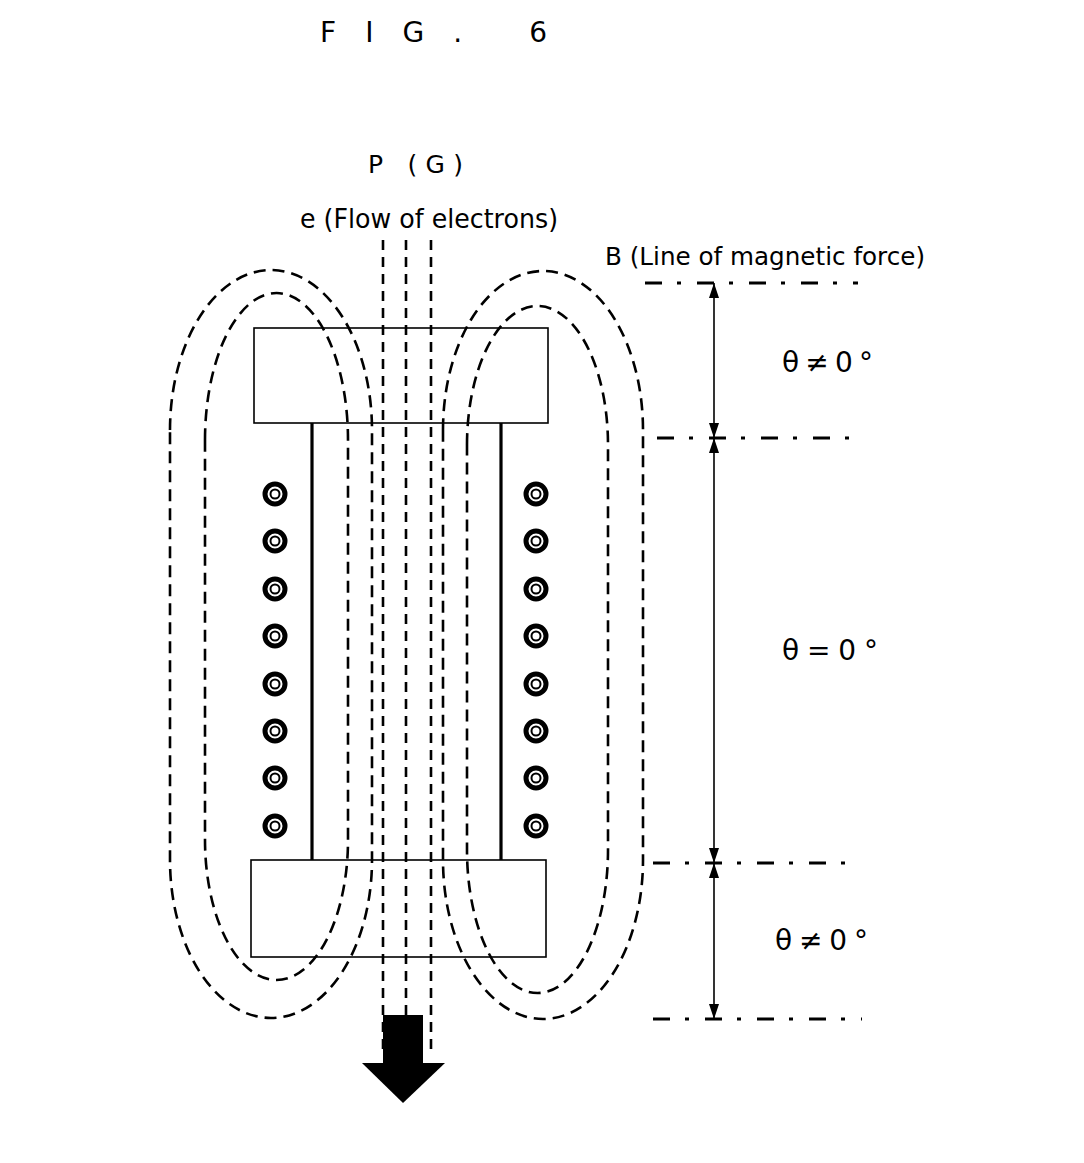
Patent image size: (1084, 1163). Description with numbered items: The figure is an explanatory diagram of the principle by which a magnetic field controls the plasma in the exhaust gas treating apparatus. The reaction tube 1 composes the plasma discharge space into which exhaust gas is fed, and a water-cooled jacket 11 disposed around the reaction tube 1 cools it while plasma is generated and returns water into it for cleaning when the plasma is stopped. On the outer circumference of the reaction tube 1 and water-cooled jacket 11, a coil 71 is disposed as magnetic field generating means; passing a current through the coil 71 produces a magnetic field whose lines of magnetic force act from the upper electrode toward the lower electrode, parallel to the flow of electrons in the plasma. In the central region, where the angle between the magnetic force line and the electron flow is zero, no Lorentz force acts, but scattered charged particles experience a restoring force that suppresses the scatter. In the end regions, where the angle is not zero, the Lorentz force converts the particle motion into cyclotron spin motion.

The reaction tube 1 is at (283, 641).
The water-cooled jacket 11 is at (312, 464).
The coil 71 is at (547, 488).